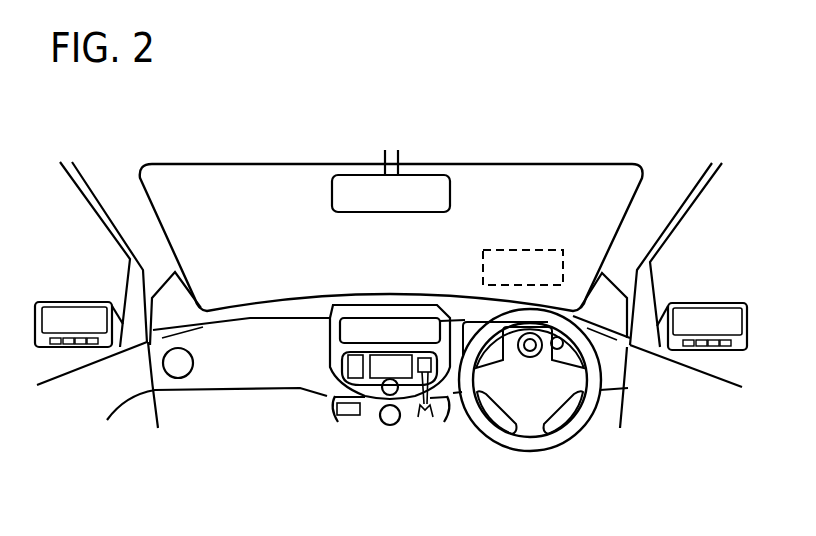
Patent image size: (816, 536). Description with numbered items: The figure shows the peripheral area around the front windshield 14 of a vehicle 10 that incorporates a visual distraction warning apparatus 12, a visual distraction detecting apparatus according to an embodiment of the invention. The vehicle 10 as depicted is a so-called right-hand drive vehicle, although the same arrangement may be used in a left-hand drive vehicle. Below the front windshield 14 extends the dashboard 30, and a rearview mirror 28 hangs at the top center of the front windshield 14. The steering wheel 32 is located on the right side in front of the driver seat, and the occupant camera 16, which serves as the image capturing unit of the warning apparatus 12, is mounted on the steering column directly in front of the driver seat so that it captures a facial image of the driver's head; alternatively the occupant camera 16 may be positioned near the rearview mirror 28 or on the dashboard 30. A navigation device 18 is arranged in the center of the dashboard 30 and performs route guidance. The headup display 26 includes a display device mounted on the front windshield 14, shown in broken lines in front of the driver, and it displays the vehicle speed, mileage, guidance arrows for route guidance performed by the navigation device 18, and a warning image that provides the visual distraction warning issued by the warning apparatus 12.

The vehicle 10 is at (175, 114).
The visual distraction warning apparatus 12 is at (395, 437).
The front windshield 14 is at (249, 174).
The occupant camera 16 is at (535, 360).
The navigation device 18 is at (388, 310).
The headup display 26 is at (510, 248).
The rearview mirror 28 is at (355, 184).
The dashboard 30 is at (258, 304).
The steering wheel 32 is at (477, 413).